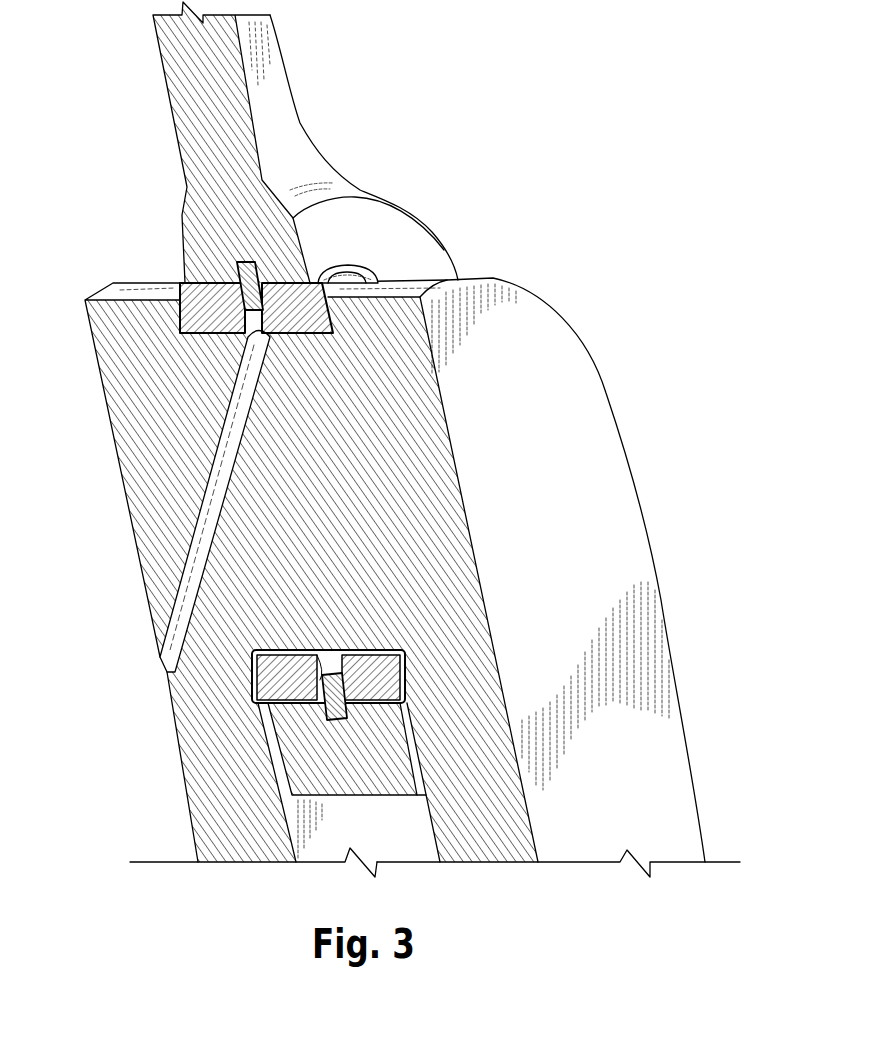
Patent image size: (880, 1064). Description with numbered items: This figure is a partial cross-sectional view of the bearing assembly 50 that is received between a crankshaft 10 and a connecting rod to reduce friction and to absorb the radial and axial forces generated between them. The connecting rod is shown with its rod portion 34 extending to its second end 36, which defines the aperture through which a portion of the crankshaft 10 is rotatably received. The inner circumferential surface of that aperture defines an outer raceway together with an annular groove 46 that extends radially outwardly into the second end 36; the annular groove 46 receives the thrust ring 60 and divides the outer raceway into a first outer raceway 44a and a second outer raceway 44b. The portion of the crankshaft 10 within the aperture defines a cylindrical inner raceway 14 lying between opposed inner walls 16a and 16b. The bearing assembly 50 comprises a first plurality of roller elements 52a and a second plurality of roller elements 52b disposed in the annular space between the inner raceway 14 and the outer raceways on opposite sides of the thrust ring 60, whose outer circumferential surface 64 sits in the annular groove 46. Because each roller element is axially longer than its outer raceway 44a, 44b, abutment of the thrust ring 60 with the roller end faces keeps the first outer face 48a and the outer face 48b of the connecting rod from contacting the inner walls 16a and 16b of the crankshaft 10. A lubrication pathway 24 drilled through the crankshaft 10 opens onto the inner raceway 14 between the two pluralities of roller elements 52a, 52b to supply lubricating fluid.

The crankshaft 10 is at (683, 737).
The inner raceway 14 is at (222, 331).
The inner wall 16a is at (322, 827).
The inner wall 16b is at (434, 830).
The lubrication pathway 24 is at (159, 678).
The rod portion 34 is at (287, 67).
The second end 36 is at (457, 263).
The first outer raceway 44a is at (303, 703).
The second outer raceway 44b is at (342, 703).
The annular groove 46 is at (353, 708).
The first outer face 48a is at (283, 762).
The outer face 48b is at (413, 747).
The bearing assembly 50 is at (351, 243).
The first plurality of roller elements 52a is at (178, 286).
The second plurality of roller elements 52b is at (372, 271).
The thrust ring 60 is at (235, 264).
The outer circumferential surface 64 is at (266, 190).